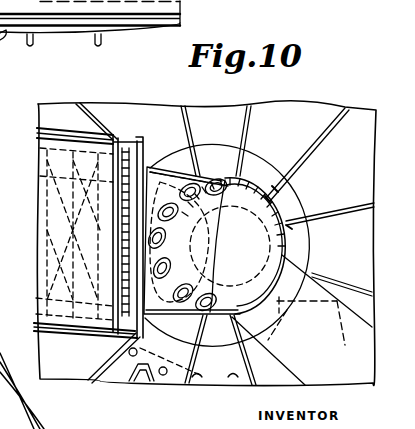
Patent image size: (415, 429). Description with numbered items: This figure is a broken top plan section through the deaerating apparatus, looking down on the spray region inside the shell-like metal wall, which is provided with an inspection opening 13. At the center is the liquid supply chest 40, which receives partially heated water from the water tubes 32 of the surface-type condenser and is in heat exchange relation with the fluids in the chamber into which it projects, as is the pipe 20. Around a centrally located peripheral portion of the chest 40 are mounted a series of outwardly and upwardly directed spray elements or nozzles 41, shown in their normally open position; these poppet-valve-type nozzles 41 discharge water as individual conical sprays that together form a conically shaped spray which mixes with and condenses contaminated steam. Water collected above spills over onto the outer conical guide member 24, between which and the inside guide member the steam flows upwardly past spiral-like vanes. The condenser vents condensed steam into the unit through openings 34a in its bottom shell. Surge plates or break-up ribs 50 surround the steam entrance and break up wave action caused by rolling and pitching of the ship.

The pipe 20 is at (342, 278).
The outer conical guide member 24 is at (216, 148).
The surge plates or break-up ribs 50 is at (310, 148).
The liquid supply chest 40 is at (282, 206).
The spray elements or nozzles 41 is at (180, 213).
The openings in bottom shell 34a is at (82, 333).
The water tubes 32 is at (124, 140).
The inspection opening 13 is at (142, 381).